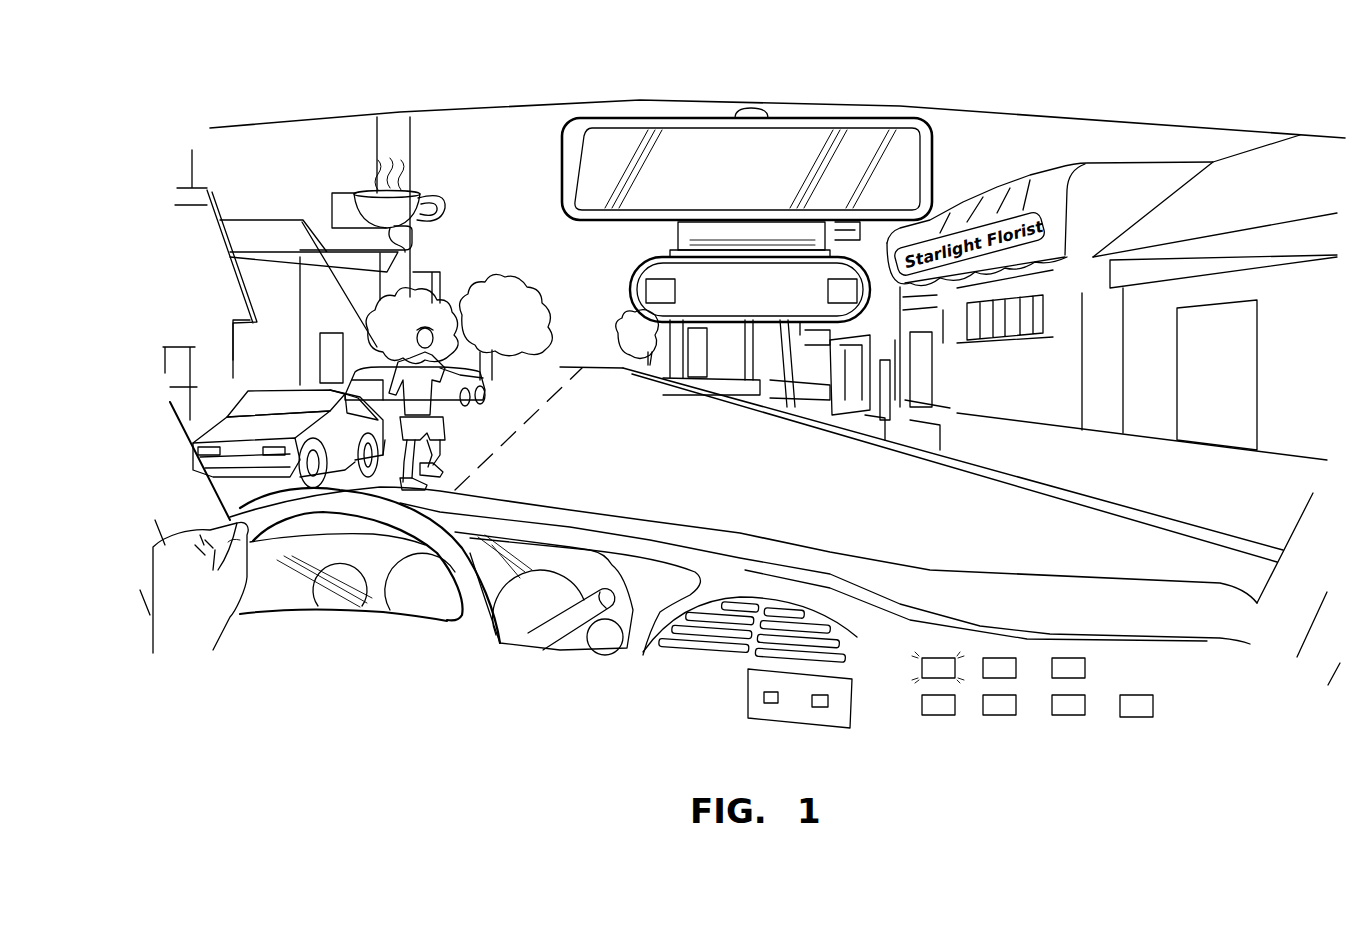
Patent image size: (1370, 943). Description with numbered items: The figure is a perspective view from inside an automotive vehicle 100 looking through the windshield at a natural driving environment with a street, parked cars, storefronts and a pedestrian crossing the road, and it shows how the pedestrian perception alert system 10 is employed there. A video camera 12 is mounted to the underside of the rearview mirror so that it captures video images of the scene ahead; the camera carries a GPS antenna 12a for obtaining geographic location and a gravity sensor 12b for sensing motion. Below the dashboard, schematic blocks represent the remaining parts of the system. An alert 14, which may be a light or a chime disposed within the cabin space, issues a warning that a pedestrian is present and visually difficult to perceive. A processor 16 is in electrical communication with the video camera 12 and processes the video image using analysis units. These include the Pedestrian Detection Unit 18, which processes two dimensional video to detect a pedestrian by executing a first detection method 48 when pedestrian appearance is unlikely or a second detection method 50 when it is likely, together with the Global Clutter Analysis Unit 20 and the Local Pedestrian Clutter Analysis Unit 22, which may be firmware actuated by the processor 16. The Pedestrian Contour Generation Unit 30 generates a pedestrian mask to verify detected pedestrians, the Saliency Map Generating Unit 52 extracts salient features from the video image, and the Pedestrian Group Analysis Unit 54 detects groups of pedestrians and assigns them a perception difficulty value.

The automotive vehicle 100 is at (200, 111).
The pedestrian perception alert system 10 is at (642, 94).
The video camera 12 is at (724, 289).
The GPS antenna 12a is at (655, 290).
The gravity sensor 12b is at (838, 290).
The alert 14 is at (938, 656).
The processor 16 is at (1016, 670).
The Pedestrian Detection Unit 18 is at (770, 708).
The Global Clutter Analysis Unit 20 is at (1085, 670).
The Local Pedestrian Clutter Analysis Unit 22 is at (922, 705).
The Pedestrian Contour Generation Unit 30 is at (983, 705).
The first detection method 48 is at (771, 704).
The second detection method 50 is at (820, 708).
The Saliency Map Generating Unit 52 is at (1052, 705).
The Pedestrian Group Analysis Unit 54 is at (1120, 705).